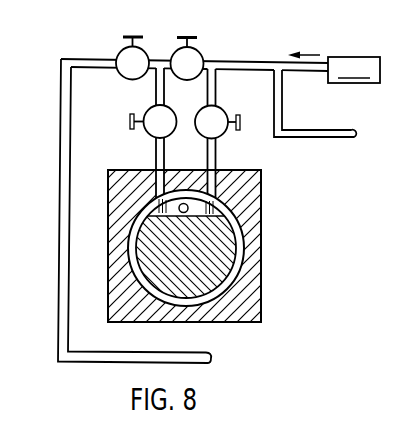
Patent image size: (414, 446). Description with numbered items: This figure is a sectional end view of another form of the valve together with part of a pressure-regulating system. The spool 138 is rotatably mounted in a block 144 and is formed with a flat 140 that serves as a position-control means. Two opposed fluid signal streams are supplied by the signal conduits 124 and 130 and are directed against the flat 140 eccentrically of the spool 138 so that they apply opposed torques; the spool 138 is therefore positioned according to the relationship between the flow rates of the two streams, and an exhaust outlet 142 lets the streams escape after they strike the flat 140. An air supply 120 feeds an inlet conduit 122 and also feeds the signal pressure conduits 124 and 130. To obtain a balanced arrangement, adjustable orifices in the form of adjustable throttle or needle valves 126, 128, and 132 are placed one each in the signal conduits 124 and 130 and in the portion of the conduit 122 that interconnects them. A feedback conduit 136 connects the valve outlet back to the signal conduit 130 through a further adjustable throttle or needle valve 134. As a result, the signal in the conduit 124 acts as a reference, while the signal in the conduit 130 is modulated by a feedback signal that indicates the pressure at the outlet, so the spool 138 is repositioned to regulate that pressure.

The air supply 120 is at (334, 68).
The inlet conduit 122 is at (283, 95).
The signal pressure conduit 124 is at (216, 97).
The adjustable throttle or needle valve 126 is at (223, 134).
The adjustable throttle or needle valve 128 is at (199, 52).
The signal pressure conduit 130 is at (154, 92).
The adjustable throttle or needle valve 132 is at (146, 134).
The adjustable throttle or needle valve 134 is at (119, 53).
The feedback conduit 136 is at (131, 351).
The spool 138 is at (240, 236).
The flat 140 is at (226, 214).
The exhaust outlet 142 is at (184, 203).
The block 144 is at (262, 259).